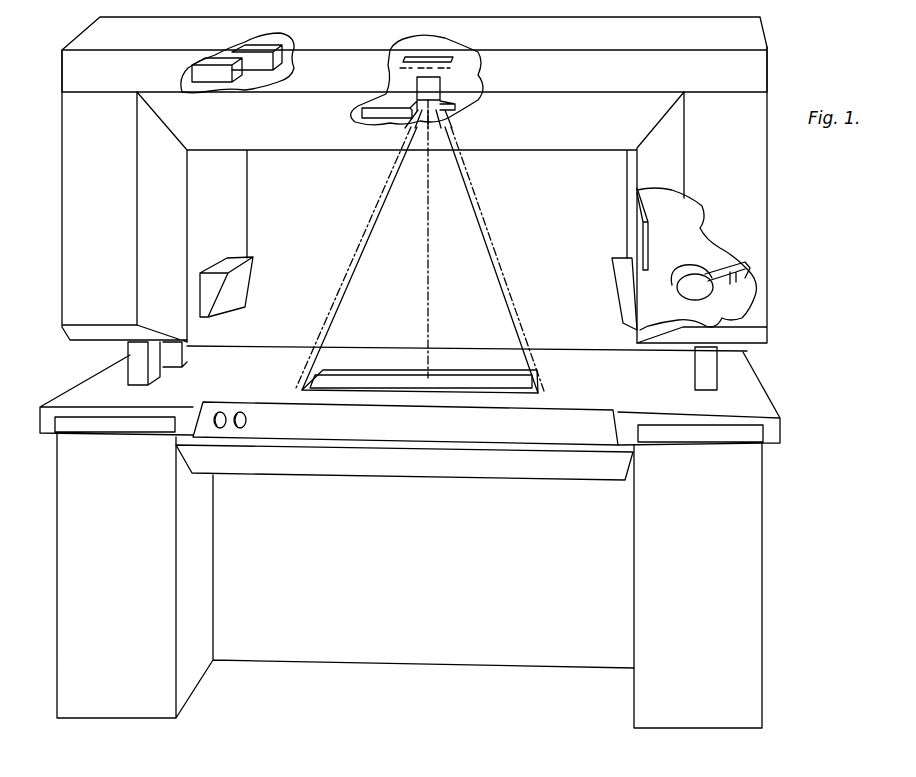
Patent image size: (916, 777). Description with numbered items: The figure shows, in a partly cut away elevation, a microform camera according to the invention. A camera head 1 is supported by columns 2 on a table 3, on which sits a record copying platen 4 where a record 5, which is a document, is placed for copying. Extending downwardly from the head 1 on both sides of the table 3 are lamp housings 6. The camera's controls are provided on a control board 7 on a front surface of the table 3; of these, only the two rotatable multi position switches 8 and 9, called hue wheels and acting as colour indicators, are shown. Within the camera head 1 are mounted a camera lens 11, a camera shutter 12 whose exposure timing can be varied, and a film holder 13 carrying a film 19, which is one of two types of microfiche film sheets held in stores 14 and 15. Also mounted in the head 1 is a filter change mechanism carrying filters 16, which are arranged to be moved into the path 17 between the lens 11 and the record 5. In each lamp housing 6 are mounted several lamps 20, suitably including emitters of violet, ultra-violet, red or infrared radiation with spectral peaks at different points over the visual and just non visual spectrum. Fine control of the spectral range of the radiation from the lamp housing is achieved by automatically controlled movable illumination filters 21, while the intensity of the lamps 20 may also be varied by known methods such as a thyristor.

The camera head 1 is at (583, 152).
The columns 2 is at (143, 356).
The table 3 is at (775, 400).
The record copying platen 4 is at (540, 380).
The record 5 is at (375, 380).
The lamp housings 6 is at (77, 228).
The control board 7 is at (515, 432).
The rotatable multi position switch 8 is at (220, 428).
The rotatable multi position switch 9 is at (240, 428).
The camera lens 11 is at (432, 88).
The camera shutter 12 is at (450, 68).
The film holder 13 is at (456, 42).
The film store 14 is at (295, 35).
The film store 15 is at (190, 75).
The filters 16 is at (358, 119).
The path 17 is at (430, 240).
The film 19 is at (400, 63).
The lamps 20 is at (740, 272).
The movable illumination filters 21 is at (657, 233).